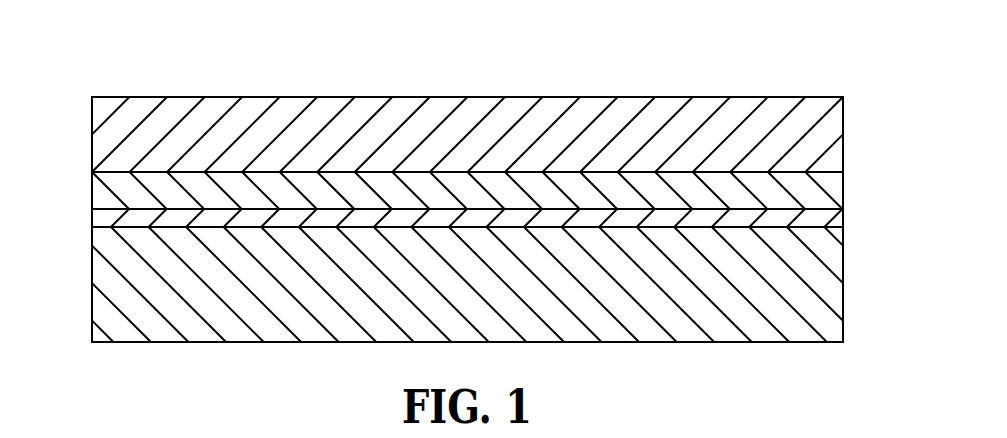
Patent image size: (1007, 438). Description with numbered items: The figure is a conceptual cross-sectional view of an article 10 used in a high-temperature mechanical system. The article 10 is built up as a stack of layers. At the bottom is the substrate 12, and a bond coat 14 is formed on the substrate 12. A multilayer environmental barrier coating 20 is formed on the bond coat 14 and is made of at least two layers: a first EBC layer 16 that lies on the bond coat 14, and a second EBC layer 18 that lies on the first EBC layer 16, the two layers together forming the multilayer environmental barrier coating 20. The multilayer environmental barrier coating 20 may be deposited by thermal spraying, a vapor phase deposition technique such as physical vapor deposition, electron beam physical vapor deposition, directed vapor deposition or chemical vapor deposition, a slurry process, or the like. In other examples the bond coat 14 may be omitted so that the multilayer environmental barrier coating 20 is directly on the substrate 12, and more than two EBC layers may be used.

The article 10 is at (75, 52).
The substrate 12 is at (110, 270).
The bond coat 14 is at (110, 222).
The first EBC layer 16 is at (110, 186).
The second EBC layer 18 is at (110, 104).
The multilayer environmental barrier coating 20 is at (890, 95).